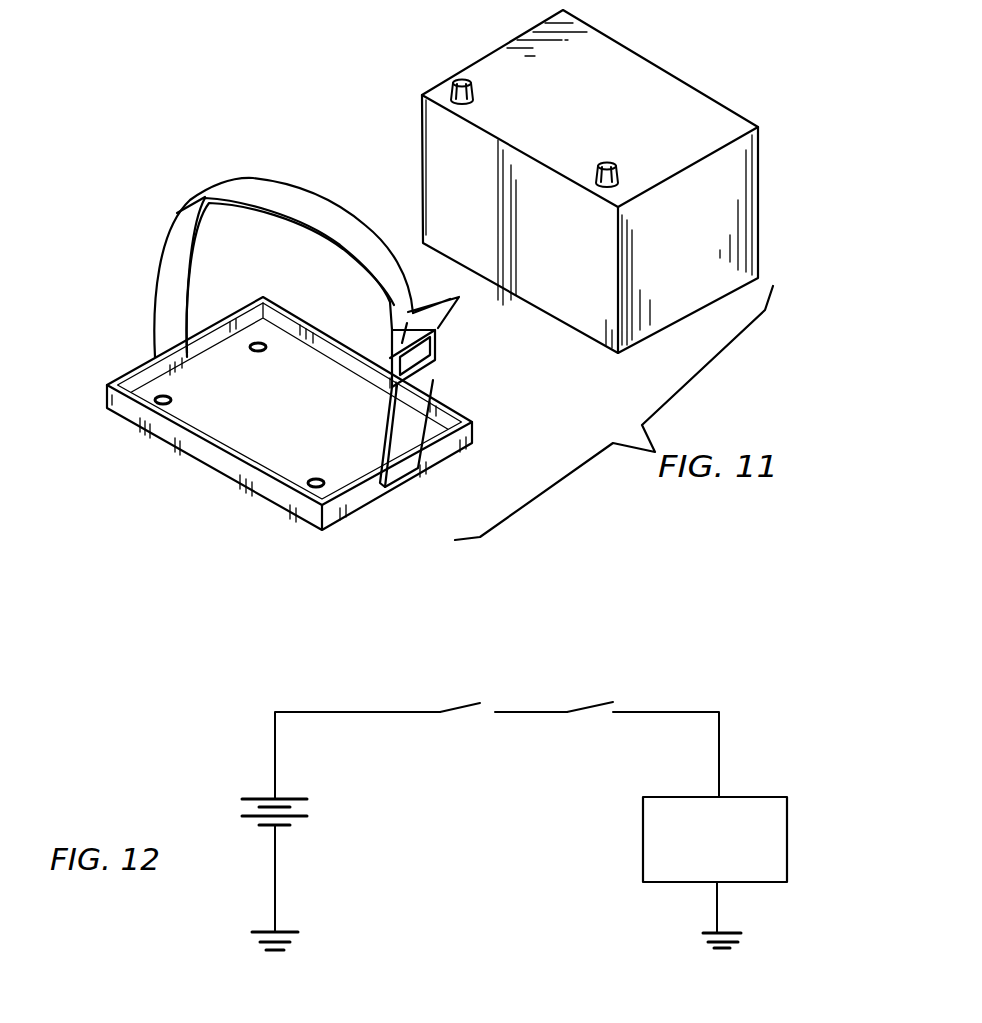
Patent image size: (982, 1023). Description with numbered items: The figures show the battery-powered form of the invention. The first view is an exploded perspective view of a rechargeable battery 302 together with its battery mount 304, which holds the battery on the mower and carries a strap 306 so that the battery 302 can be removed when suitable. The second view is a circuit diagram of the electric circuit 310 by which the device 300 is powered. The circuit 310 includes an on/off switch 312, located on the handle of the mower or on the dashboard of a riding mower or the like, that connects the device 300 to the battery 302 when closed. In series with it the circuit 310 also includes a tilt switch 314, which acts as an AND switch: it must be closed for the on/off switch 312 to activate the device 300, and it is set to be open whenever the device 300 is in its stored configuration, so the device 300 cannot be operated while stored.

In FIG. 11, the rechargeable battery 302 is at (460, 80).
In FIG. 12, the rechargeable battery 302 is at (310, 808).
In FIG. 11, the battery mount 304 is at (158, 438).
In FIG. 11, the strap 306 is at (334, 199).
In FIG. 12, the electric circuit 310 is at (748, 702).
In FIG. 12, the on/off switch 312 is at (470, 700).
In FIG. 12, the tilt switch 314 is at (597, 700).
In FIG. 12, the device 300 is at (782, 797).